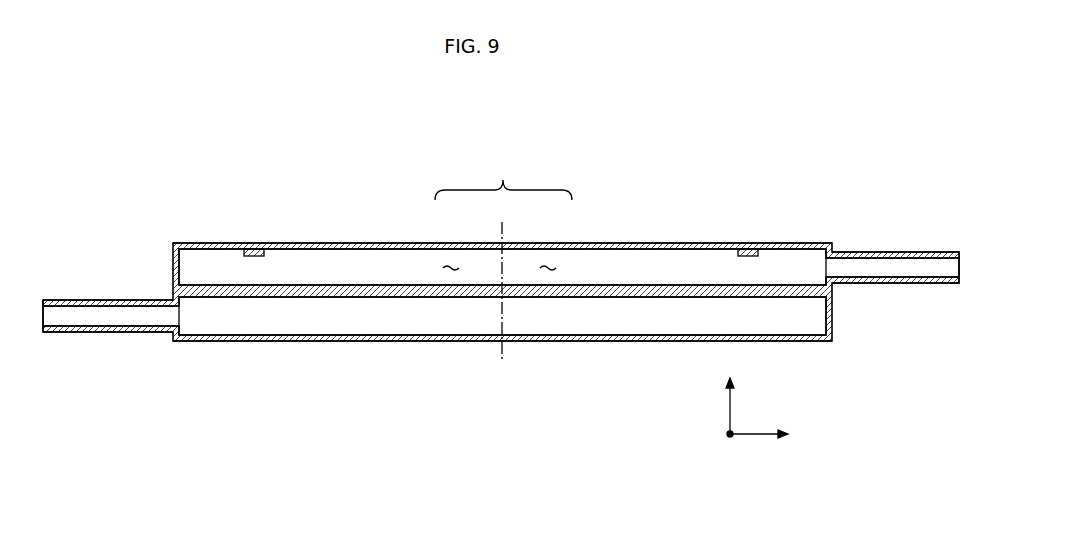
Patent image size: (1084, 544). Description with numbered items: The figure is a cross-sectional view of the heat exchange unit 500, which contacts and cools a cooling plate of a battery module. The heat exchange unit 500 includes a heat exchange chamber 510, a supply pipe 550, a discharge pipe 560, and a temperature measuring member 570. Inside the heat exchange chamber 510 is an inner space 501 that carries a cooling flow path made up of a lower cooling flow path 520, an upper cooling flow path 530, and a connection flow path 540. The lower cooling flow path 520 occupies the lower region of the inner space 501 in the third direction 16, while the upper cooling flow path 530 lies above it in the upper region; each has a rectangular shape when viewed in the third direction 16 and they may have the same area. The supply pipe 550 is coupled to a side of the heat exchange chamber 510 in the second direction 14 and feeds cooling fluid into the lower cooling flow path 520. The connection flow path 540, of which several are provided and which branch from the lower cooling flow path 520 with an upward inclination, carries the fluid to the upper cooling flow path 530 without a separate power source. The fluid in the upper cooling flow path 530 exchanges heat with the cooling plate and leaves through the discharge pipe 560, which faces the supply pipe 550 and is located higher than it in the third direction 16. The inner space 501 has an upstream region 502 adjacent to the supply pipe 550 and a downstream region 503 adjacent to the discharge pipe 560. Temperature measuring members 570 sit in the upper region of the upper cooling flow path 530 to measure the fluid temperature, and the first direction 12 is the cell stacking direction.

The heat exchange unit 500 is at (235, 119).
The inner space 501 is at (503, 177).
The upstream region 502 is at (453, 266).
The downstream region 503 is at (548, 266).
The heat exchange chamber 510 is at (352, 243).
The lower cooling flow path 520 is at (320, 315).
The upper cooling flow path 530 is at (198, 267).
The connection flow path 540 is at (198, 305).
The supply pipe 550 is at (68, 300).
The discharge pipe 560 is at (907, 252).
The temperature measuring member 570 is at (254, 249).
The first direction 12 is at (728, 437).
The second direction 14 is at (773, 435).
The third direction 16 is at (731, 392).